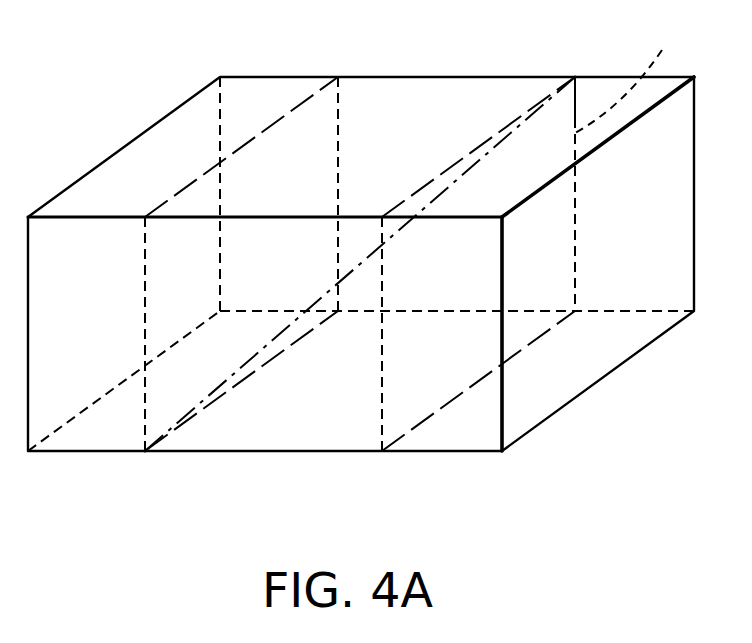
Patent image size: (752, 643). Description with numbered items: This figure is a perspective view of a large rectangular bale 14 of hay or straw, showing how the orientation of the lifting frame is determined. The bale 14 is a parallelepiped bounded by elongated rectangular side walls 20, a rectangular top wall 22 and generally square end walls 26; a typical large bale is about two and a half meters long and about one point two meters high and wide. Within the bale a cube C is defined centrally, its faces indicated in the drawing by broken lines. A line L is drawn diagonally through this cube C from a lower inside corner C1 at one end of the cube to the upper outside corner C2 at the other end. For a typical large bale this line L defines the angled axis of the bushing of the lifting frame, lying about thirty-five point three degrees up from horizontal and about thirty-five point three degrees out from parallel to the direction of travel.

The bale 14 is at (89, 476).
The top wall 22 is at (255, 90).
The side wall 20 is at (453, 433).
The end wall 26 is at (615, 348).
The line L is at (268, 343).
The lower inside corner C1 is at (145, 452).
The upper outside corner C2 is at (574, 77).
The cube C is at (632, 79).